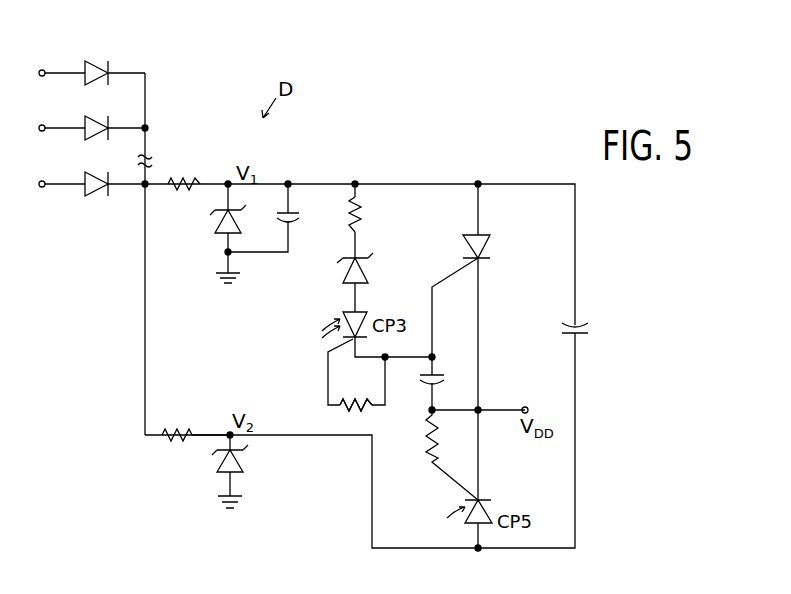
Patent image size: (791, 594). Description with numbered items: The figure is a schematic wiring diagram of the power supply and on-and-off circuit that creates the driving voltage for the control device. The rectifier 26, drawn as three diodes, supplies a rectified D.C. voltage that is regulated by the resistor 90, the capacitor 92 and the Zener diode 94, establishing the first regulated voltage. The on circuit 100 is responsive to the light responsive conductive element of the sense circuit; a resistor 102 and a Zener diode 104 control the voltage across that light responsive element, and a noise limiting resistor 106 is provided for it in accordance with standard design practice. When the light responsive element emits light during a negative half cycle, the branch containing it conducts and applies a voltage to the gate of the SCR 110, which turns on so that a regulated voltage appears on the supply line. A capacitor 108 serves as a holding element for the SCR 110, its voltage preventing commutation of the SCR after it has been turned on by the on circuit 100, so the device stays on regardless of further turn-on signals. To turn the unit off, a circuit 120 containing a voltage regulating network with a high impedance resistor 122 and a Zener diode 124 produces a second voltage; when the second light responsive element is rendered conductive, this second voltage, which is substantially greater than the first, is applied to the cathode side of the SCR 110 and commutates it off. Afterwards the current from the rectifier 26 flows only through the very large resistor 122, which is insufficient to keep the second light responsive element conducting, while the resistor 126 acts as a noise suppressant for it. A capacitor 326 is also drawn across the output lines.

The rectifier 26 is at (88, 180).
The resistor 90 is at (186, 180).
The capacitor 92 is at (280, 217).
The Zener diode 94 is at (215, 228).
The on circuit 100 is at (338, 231).
The resistor 102 is at (358, 214).
The Zener diode 104 is at (366, 270).
The noise limiting resistor 106 is at (365, 406).
The capacitor 108 is at (445, 381).
The SCR 110 is at (485, 243).
The circuit 120 is at (163, 489).
The high impedance resistor 122 is at (178, 428).
The Zener diode 124 is at (244, 463).
The resistor 126 is at (430, 446).
The capacitor 326 is at (588, 327).